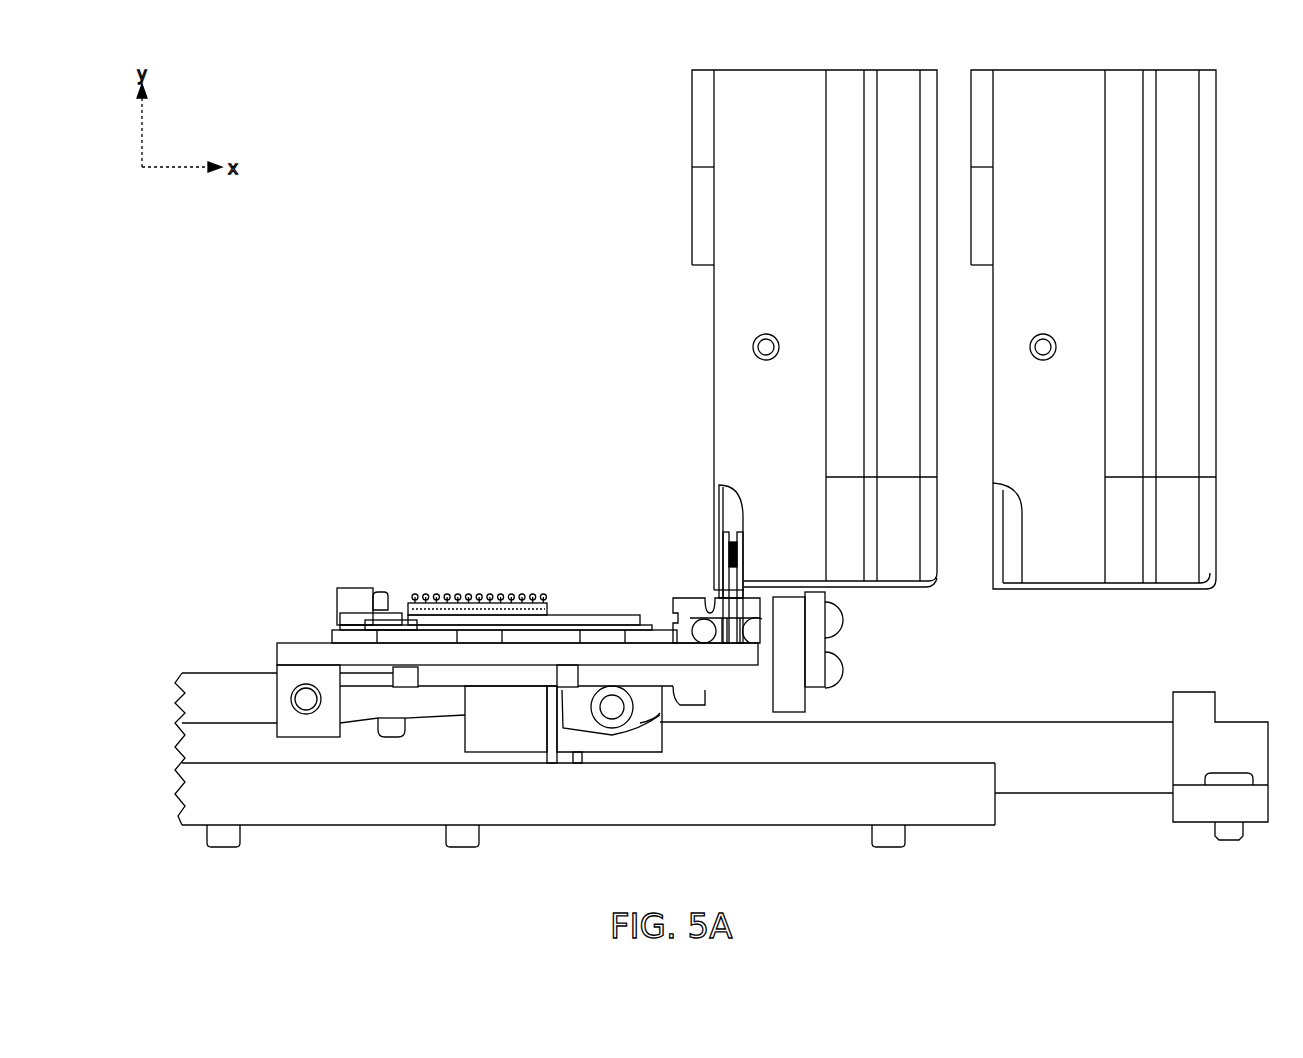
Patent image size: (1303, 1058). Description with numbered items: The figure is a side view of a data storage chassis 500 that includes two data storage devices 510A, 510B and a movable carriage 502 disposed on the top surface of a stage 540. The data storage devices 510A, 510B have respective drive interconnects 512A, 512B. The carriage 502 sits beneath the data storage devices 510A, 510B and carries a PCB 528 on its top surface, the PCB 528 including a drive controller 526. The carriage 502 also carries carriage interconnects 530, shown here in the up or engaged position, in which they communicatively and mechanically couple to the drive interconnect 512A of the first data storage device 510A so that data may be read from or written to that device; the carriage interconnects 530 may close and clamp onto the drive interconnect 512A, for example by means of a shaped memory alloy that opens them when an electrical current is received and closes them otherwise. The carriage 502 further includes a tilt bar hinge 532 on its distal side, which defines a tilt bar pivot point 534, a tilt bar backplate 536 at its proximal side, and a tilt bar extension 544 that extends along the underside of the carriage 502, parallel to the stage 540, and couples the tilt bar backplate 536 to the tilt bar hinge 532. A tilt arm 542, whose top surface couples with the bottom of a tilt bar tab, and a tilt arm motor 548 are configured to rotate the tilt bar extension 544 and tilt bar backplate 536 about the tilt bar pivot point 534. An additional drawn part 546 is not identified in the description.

The data storage chassis 500 is at (438, 320).
The movable carriage 502 is at (193, 625).
The data storage device 510A is at (780, 85).
The data storage device 510B is at (1060, 85).
The drive interconnect 512A is at (718, 512).
The drive interconnect 512B is at (1000, 560).
The drive controller 526 is at (600, 618).
The PCB 528 is at (493, 598).
The carriage interconnects 530 is at (720, 564).
The tilt bar hinge 532 is at (328, 723).
The tilt bar pivot point 534 is at (306, 697).
The tilt bar backplate 536 is at (812, 673).
The stage 540 is at (1073, 773).
The tilt arm 542 is at (658, 703).
The tilt bar extension 544 is at (310, 652).
The slider block 546 is at (757, 683).
The tilt arm motor 548 is at (588, 735).